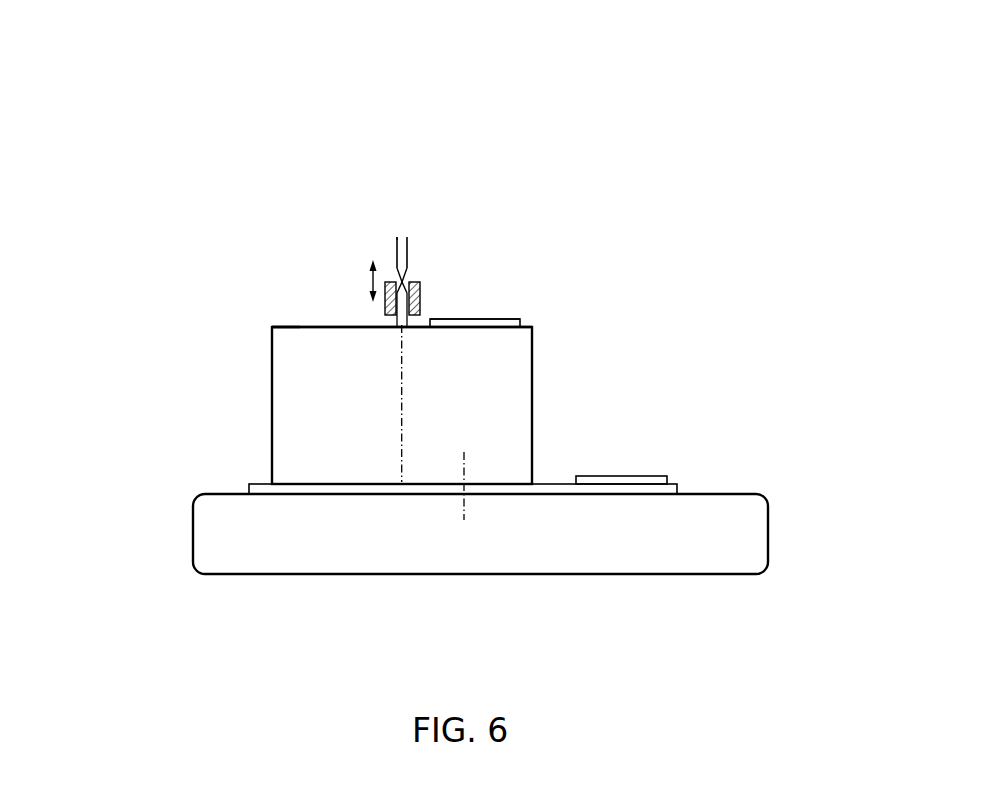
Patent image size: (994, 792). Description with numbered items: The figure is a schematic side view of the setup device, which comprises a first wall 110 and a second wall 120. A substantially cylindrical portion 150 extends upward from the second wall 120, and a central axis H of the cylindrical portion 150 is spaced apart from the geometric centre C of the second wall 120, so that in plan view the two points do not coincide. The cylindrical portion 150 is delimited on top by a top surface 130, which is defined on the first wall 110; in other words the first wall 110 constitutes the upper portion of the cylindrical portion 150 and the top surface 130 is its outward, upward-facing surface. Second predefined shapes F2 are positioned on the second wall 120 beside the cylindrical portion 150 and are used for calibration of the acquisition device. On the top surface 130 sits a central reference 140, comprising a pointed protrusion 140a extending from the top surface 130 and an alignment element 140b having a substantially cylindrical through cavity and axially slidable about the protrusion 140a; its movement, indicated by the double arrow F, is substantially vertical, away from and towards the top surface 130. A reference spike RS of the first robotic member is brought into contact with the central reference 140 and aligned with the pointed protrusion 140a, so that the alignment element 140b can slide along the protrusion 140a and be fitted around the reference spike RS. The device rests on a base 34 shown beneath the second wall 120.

The stage base 34 is at (232, 560).
The first wall 110 is at (330, 322).
The second wall 120 is at (270, 489).
The top surface 130 is at (296, 325).
The central reference 140 is at (426, 270).
The pointed protrusion 140a is at (421, 317).
The alignment element 140b is at (421, 292).
The substantially cylindrical portion 150 is at (290, 362).
The reference spike RS is at (395, 248).
The force direction F is at (363, 281).
The central axis H is at (400, 399).
The geometric centre C is at (467, 483).
The second predefined shapes F2 is at (525, 318).